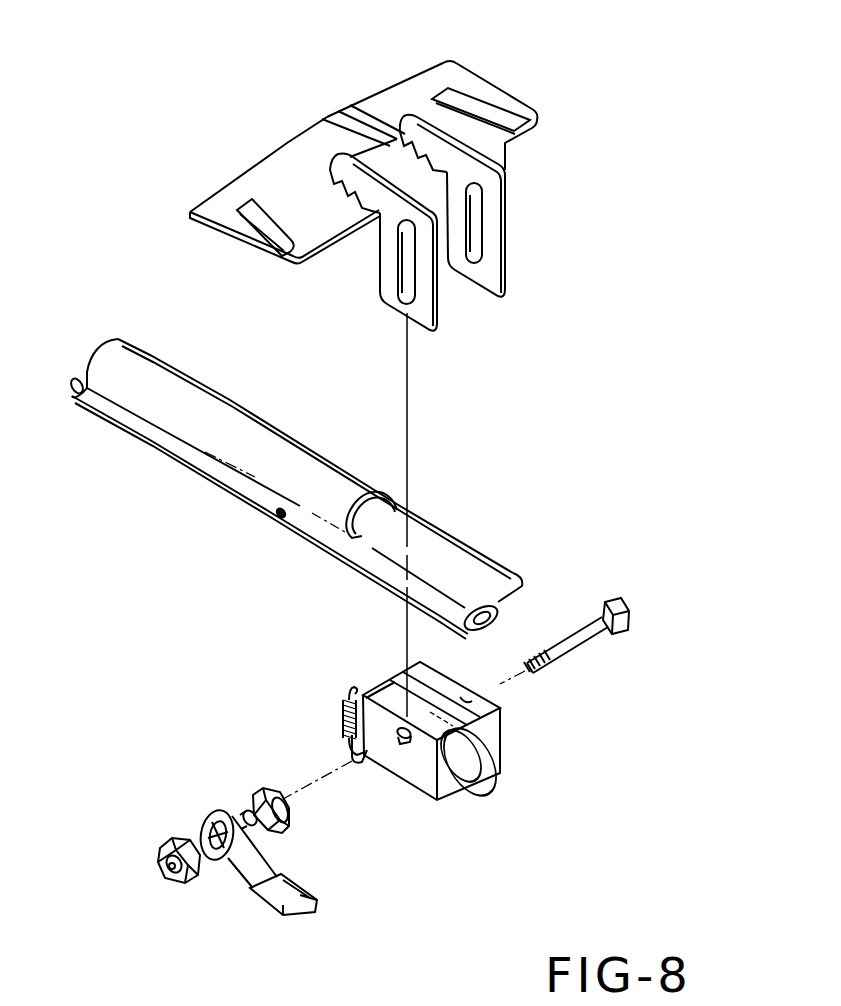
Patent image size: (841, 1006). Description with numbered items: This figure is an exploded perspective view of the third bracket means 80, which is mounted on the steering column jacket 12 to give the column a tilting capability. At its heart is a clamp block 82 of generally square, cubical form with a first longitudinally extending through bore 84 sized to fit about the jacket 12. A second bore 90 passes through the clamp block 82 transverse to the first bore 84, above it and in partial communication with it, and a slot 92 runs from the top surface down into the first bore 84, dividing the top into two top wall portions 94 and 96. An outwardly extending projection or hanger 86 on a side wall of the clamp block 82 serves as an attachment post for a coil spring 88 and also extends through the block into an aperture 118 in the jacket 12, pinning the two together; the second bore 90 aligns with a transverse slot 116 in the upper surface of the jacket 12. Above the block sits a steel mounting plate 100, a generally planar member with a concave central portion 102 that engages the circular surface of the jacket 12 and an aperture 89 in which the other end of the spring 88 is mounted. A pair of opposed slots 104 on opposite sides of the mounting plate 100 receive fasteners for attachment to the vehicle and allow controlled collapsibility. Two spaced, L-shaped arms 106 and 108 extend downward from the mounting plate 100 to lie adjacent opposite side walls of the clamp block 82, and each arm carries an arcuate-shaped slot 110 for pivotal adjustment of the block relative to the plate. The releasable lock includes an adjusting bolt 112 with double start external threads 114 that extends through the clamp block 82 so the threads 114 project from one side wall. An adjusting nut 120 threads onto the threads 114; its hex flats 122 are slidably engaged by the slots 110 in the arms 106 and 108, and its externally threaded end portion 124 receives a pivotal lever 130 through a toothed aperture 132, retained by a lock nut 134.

The third bracket means 80 is at (358, 179).
The mounting plate 100 is at (246, 189).
The concave central portion 102 is at (318, 121).
The slots 104 is at (250, 228).
The L-shaped arm 106 is at (317, 227).
The aperture 89 is at (340, 213).
The L-shaped arm 108 is at (490, 170).
The arcuate-shaped slot 110 is at (478, 233).
The jacket 12 is at (296, 489).
The transverse slot 116 is at (373, 500).
The aperture 118 is at (280, 521).
The clamp block 82 is at (418, 732).
The first through bore 84 is at (480, 788).
The projection or hanger 86 is at (360, 765).
The coil spring 88 is at (342, 717).
The second bore 90 is at (402, 745).
The slot 92 is at (387, 693).
The top wall portion 94 is at (380, 700).
The top wall portion 96 is at (440, 688).
The adjusting bolt 112 is at (595, 655).
The double start external threads 114 is at (543, 673).
The adjusting nut 120 is at (185, 833).
The hex flats 122 is at (250, 797).
The externally threaded end portion 124 is at (240, 813).
The pivotal lever 130 is at (239, 858).
The toothed aperture 132 is at (200, 837).
The lock nut 134 is at (163, 870).